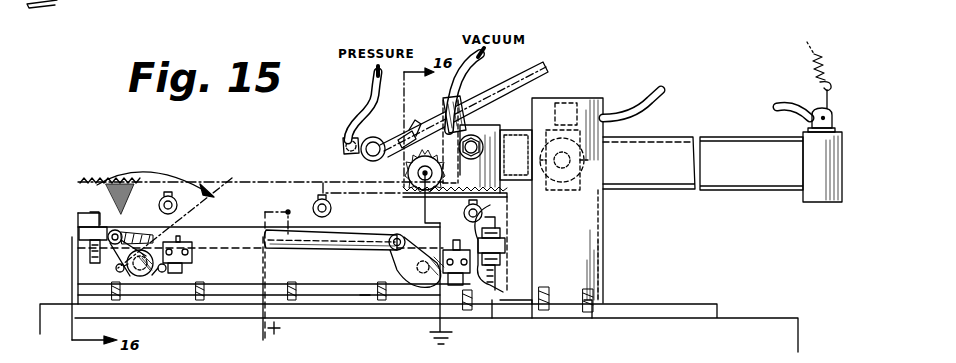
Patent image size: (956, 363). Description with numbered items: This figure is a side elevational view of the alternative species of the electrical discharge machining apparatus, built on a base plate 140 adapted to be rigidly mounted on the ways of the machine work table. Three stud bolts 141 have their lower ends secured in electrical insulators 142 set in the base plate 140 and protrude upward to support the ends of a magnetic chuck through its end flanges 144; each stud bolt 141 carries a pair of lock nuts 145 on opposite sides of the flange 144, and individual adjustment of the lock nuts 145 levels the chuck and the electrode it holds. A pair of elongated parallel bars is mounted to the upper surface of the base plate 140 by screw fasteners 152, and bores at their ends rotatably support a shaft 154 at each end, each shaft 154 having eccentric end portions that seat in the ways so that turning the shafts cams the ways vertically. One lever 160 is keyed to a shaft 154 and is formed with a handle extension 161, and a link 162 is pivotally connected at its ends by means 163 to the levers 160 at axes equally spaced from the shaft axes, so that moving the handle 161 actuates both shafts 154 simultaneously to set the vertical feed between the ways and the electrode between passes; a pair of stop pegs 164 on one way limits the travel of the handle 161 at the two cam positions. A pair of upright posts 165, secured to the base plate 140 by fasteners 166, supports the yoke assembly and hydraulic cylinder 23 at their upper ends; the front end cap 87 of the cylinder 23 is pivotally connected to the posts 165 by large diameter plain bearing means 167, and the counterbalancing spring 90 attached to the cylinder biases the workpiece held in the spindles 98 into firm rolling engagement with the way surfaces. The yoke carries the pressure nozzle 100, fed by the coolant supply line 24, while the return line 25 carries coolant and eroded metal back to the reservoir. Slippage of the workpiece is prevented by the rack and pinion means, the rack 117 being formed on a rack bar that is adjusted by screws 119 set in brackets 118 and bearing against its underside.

The hydraulic cylinder 23 is at (700, 140).
The coolant supply line 24 is at (360, 99).
The coolant return line 25 is at (478, 67).
The front end cap 87 is at (608, 125).
The counterbalancing spring 90 is at (826, 63).
The center spindles 98 is at (418, 178).
The pressure nozzle 100 is at (397, 173).
The rack 117 is at (140, 184).
The brackets 118 is at (419, 288).
The adjusting screw 119 is at (465, 284).
The base plate 140 is at (700, 318).
The stud bolts 141 is at (90, 255).
The electrical insulators 142 is at (505, 313).
The end flanges 144 is at (78, 230).
The lock nuts 145 is at (500, 233).
The screw fasteners 152 is at (368, 306).
The shaft 154 is at (133, 287).
The lever 160 is at (445, 288).
The handle extension 161 is at (86, 198).
The link 162 is at (290, 248).
The pivot means 163 is at (392, 252).
The stop pegs 164 is at (117, 268).
The upright posts 165 is at (550, 100).
The fasteners 166 is at (588, 324).
The plain bearing means 167 is at (606, 160).